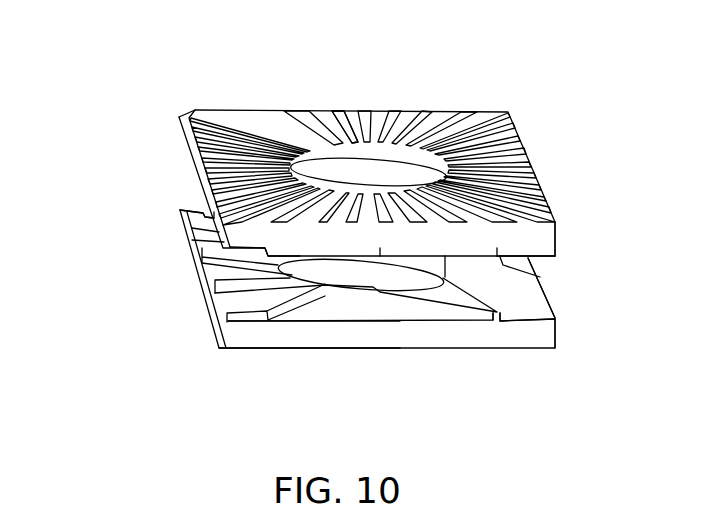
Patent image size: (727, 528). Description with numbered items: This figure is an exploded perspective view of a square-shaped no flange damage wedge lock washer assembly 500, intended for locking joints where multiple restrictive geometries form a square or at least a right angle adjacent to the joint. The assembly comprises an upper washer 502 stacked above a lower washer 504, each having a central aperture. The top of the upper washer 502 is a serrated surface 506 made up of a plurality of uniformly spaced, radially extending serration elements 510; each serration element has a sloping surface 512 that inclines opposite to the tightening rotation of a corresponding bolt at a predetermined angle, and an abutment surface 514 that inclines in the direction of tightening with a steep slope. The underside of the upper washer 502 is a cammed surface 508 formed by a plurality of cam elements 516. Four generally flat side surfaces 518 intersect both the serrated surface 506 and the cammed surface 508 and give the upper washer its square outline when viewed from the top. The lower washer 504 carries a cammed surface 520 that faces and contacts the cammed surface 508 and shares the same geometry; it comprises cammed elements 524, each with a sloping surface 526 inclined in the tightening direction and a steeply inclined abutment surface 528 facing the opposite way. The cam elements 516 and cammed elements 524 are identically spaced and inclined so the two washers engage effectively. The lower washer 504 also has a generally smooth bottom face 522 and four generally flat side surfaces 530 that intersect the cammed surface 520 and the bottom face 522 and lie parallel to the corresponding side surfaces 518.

The no flange damage wedge lock washers 500 is at (161, 110).
The upper washer 502 is at (362, 160).
The lower washer 504 is at (366, 308).
The serrated surface 506 is at (273, 121).
The cammed surface 508 is at (205, 220).
The serration elements 510 is at (323, 122).
The sloping surface 512 is at (370, 122).
The abutment surface 514 is at (417, 118).
The cam elements 516 is at (505, 253).
The side surfaces 518 is at (258, 236).
The cammed surface 520 is at (527, 293).
The generally smooth bottom face 522 is at (198, 287).
The cammed elements 524 is at (493, 323).
The sloping surface 526 is at (418, 303).
The abutment surface 528 is at (292, 303).
The side surfaces 530 is at (247, 333).